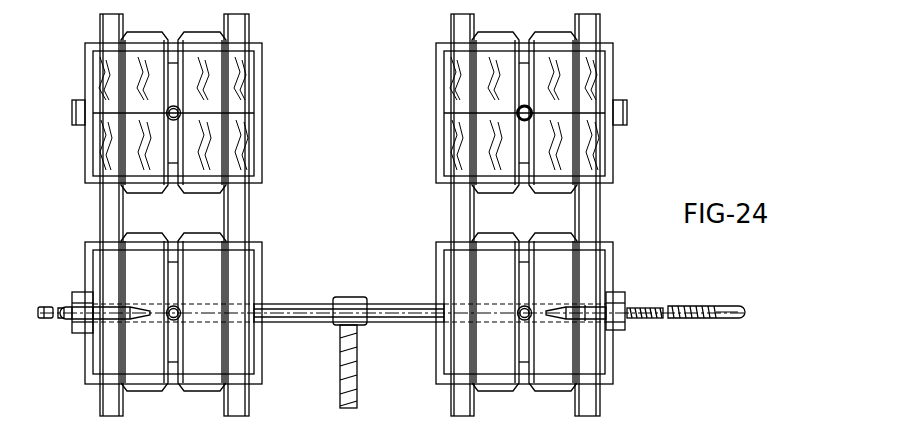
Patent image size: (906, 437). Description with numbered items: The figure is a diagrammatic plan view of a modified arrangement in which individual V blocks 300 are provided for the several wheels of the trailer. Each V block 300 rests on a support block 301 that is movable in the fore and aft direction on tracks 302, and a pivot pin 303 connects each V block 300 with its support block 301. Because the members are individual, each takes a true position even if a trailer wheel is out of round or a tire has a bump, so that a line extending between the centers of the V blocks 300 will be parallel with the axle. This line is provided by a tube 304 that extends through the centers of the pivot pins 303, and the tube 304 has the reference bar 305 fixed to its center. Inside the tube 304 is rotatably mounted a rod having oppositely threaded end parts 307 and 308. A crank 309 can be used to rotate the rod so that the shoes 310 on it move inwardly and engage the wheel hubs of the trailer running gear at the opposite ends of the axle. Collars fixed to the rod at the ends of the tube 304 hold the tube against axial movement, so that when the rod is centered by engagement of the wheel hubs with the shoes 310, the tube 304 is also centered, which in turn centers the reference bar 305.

The V block 300 is at (247, 128).
The support block 301 is at (258, 63).
The track 302 is at (247, 212).
The pivot pin 303 is at (172, 320).
The tube 304 is at (392, 322).
The reference bar 305 is at (338, 326).
The threaded end part 307 is at (45, 320).
The threaded end part 308 is at (695, 321).
The crank 309 is at (735, 321).
The shoe 310 is at (78, 296).